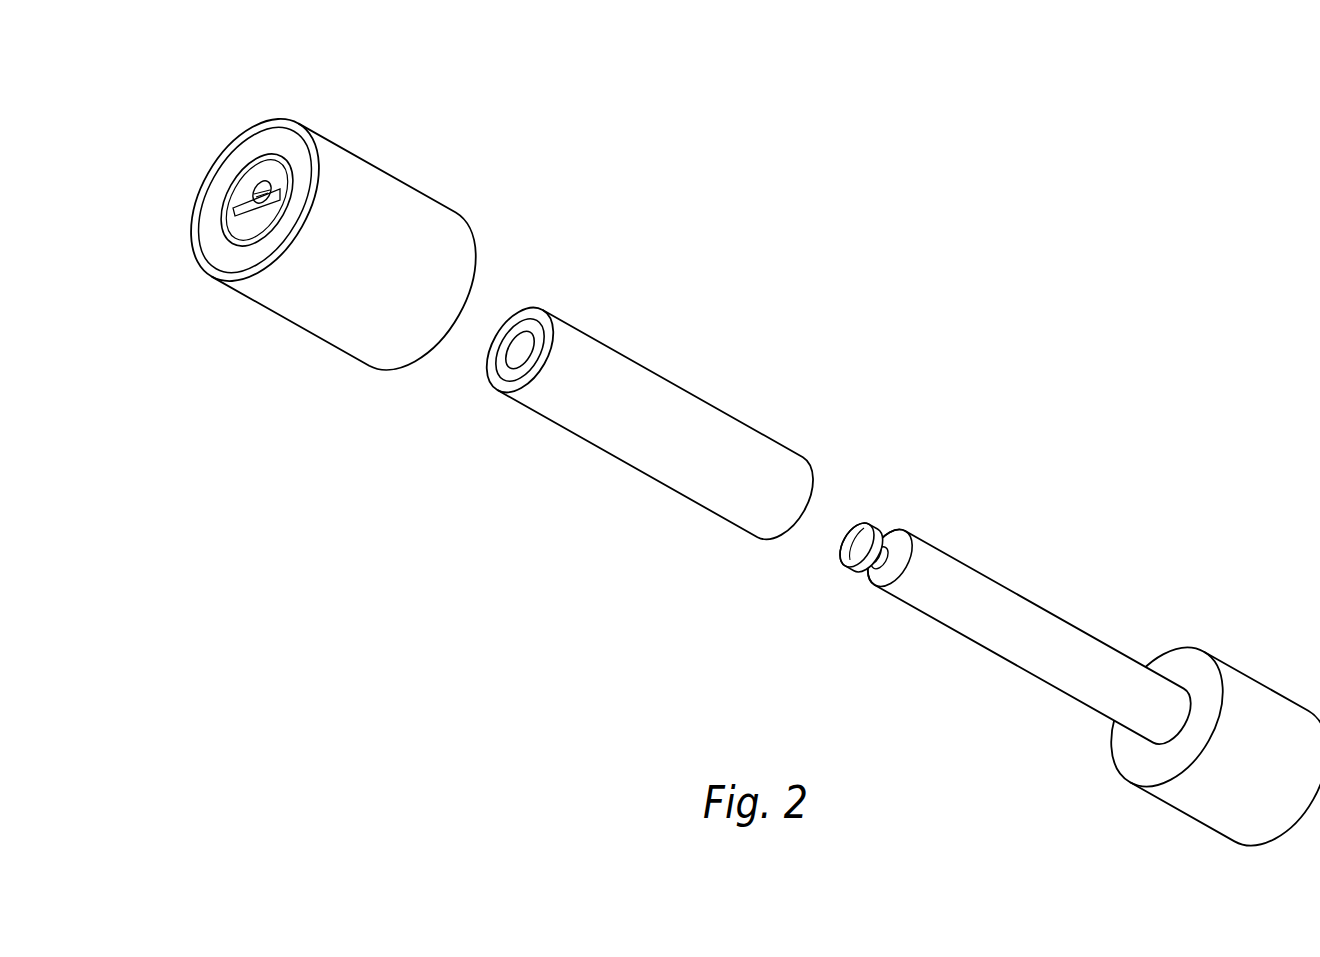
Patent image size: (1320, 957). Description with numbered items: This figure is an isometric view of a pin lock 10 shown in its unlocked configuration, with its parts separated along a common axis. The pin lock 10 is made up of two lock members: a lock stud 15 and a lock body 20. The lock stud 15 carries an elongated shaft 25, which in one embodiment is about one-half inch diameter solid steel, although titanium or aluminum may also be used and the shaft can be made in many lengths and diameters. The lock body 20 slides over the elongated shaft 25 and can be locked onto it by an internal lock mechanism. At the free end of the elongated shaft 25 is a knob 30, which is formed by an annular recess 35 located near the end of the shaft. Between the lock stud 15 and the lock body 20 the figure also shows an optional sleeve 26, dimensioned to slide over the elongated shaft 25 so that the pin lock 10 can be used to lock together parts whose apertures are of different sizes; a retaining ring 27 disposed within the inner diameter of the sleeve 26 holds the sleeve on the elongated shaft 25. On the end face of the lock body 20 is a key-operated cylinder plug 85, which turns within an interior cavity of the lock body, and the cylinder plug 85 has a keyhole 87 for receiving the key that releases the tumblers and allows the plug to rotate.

The pin lock 10 is at (963, 290).
The lock stud 15 is at (968, 678).
The lock body 20 is at (293, 203).
The elongated shaft 25 is at (1000, 597).
The sleeve 26 is at (643, 385).
The retaining ring 27 is at (530, 327).
The knob 30 is at (843, 567).
The annular recess 35 is at (900, 532).
The cylinder plug 85 is at (252, 175).
The keyhole 87 is at (277, 188).